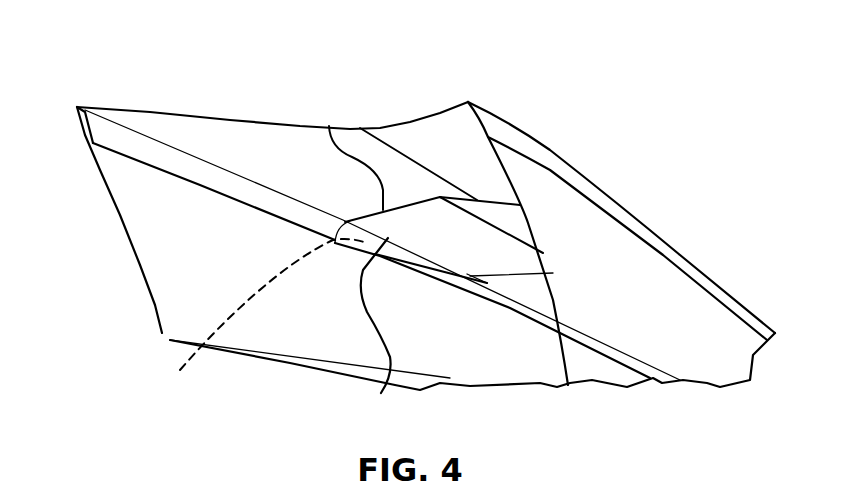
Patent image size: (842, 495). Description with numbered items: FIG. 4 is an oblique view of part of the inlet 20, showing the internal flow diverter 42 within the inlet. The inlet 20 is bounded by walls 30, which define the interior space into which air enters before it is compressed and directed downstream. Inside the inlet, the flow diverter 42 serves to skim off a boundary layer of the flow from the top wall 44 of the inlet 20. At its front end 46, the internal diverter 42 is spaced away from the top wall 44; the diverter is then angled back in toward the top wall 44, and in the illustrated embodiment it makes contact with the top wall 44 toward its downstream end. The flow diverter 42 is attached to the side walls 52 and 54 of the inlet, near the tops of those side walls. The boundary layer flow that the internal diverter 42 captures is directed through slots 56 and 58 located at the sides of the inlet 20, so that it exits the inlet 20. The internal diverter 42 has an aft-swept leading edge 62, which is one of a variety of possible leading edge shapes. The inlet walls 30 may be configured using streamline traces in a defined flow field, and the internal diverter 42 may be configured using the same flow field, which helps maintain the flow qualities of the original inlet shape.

The inlet 20 is at (187, 78).
The walls 30 is at (118, 232).
The flow diverter 42 is at (376, 331).
The top wall 44 is at (465, 131).
The front end 46 is at (105, 98).
The side wall 52 is at (610, 250).
The side wall 54 is at (190, 292).
The slot 56 is at (657, 235).
The slot 58 is at (259, 317).
The aft-swept leading edge 62 is at (329, 126).